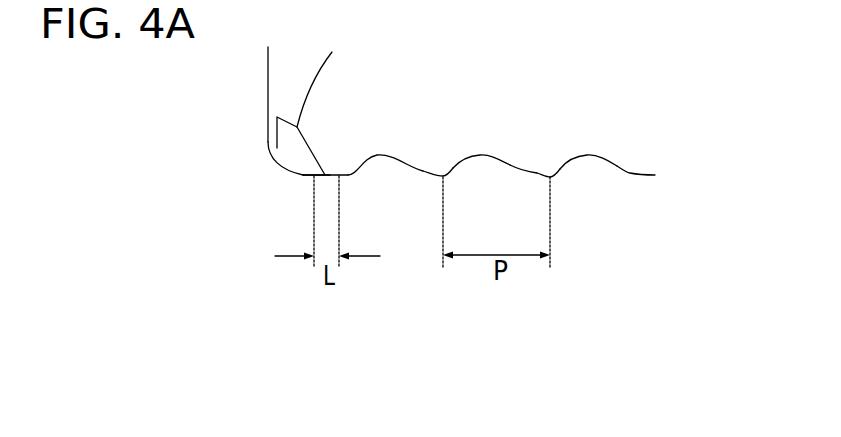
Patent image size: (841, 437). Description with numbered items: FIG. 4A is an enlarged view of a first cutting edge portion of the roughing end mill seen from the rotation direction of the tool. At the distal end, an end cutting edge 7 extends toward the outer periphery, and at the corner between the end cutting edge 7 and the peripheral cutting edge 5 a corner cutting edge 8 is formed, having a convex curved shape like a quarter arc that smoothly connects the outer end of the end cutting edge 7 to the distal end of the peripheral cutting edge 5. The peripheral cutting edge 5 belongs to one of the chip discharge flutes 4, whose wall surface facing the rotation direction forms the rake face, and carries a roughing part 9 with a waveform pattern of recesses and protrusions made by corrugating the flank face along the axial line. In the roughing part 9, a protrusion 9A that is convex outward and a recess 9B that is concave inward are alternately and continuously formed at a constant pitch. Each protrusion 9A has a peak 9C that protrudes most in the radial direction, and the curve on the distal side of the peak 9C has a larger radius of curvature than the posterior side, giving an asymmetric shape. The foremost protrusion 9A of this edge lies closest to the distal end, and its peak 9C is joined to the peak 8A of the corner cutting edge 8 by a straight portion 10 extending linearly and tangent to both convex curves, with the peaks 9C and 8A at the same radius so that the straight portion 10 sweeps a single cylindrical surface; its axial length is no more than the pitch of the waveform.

The chip discharge flute 4 is at (533, 90).
The peripheral cutting edge 5 is at (461, 222).
The end cutting edge 7 is at (268, 97).
The corner cutting edge 8 is at (283, 168).
The peak of the corner cutting edge 8A is at (312, 178).
The roughing part 9 is at (540, 221).
The protrusion 9A is at (425, 175).
The recess 9B is at (480, 157).
The peak 9C is at (577, 230).
The straight portion 10 is at (340, 180).